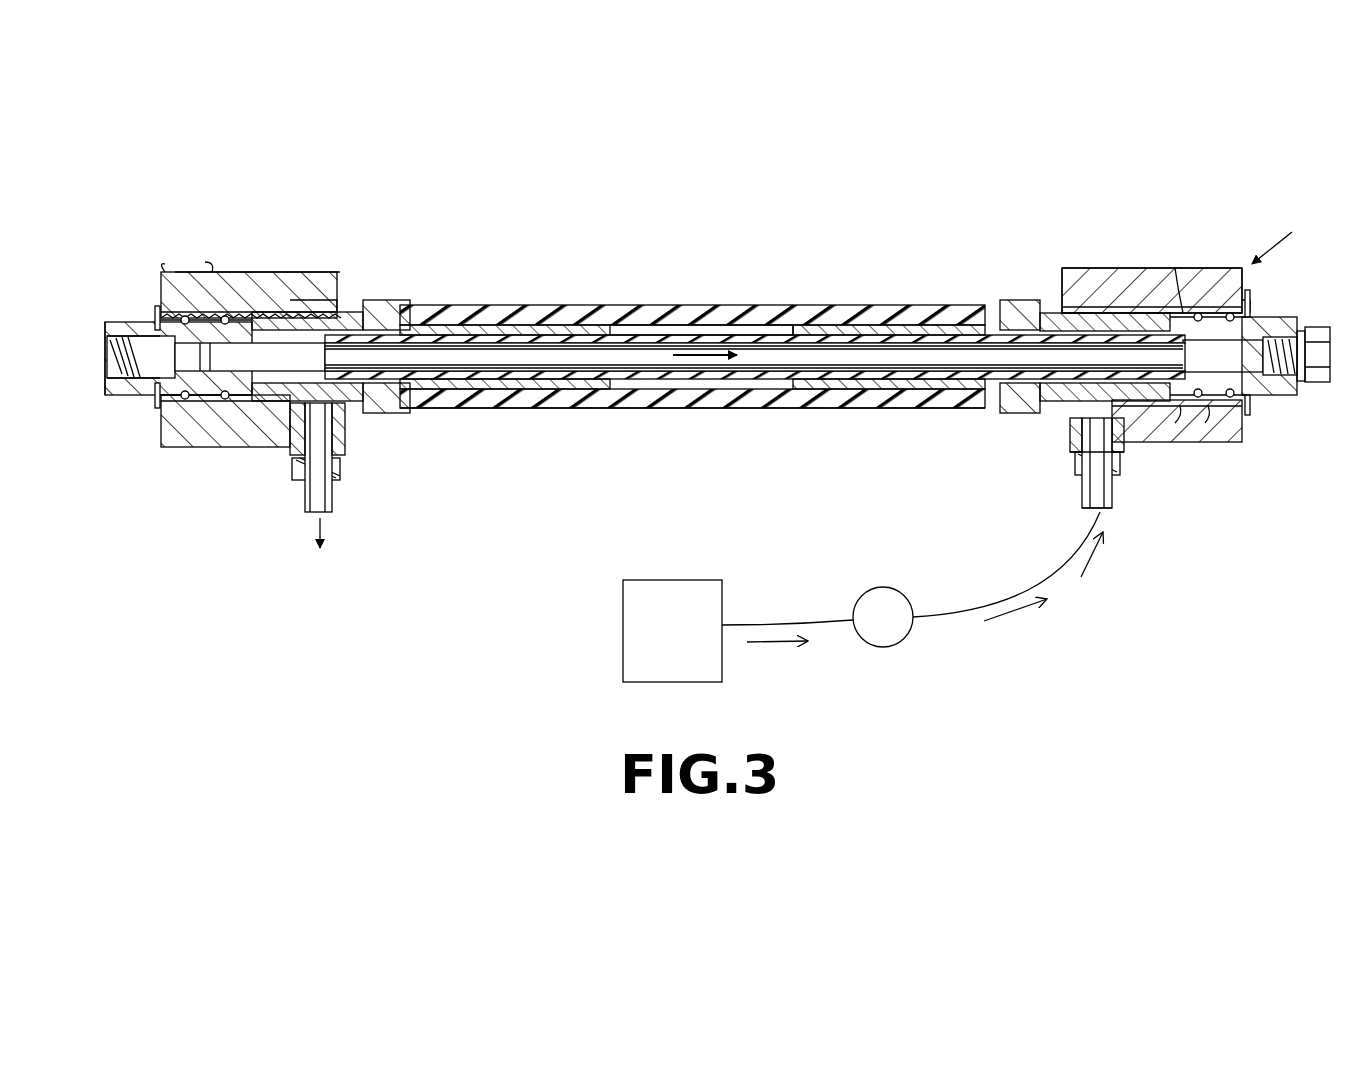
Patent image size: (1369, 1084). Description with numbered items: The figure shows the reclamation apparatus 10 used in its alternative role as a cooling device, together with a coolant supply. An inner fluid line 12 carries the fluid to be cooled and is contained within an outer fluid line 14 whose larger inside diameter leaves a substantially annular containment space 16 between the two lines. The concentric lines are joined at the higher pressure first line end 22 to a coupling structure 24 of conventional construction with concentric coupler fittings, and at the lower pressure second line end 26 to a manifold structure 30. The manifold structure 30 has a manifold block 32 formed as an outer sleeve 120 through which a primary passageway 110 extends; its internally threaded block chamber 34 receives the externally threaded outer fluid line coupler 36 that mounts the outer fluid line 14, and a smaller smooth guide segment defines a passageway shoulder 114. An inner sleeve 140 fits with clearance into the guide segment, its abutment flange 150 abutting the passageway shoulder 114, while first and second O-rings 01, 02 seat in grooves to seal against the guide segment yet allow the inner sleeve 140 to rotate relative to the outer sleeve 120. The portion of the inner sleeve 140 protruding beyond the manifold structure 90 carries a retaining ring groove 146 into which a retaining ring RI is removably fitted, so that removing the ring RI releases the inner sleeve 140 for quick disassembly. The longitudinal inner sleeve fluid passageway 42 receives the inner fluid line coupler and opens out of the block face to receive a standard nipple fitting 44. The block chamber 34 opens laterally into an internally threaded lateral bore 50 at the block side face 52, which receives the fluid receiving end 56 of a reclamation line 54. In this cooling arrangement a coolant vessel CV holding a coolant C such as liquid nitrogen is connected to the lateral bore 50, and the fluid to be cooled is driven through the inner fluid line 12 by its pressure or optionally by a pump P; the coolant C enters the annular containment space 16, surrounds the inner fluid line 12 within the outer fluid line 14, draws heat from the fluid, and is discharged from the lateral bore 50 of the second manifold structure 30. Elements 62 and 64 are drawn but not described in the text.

The reclamation apparatus 10 is at (1285, 241).
The inner fluid line 12 is at (698, 336).
The outer fluid line 14 is at (618, 305).
The annular containment space 16 is at (770, 326).
The first line end 22 is at (500, 409).
The coupling structure 24 is at (338, 271).
The second line end 26 is at (918, 409).
The manifold structure 30 is at (1216, 268).
The manifold block 32 is at (308, 271).
The block chamber 34 is at (340, 297).
The outer fluid line coupler 36 is at (396, 300).
The inner sleeve fluid passageway 42 is at (120, 380).
The nipple fitting 44 is at (1328, 346).
The lateral bore 50 is at (332, 428).
The side face 52 is at (280, 447).
The reclamation line 54 is at (1083, 500).
The fluid receiving end 56 is at (1082, 465).
The right lower block 62 is at (1244, 416).
The block face 64 is at (1066, 268).
The manifold structure 90 is at (1112, 512).
The primary passageway 110 is at (150, 351).
The passageway shoulder 114 is at (1183, 292).
The outer sleeve 120 is at (242, 447).
The inner sleeve 140 is at (130, 397).
The retaining ring groove 146 is at (140, 412).
The abutment flange 150 is at (288, 272).
The first O-ring 01 is at (687, 341).
The second O-ring 02 is at (686, 341).
The retaining ring RI is at (152, 312).
The coolant C is at (711, 598).
The coolant vessel CV is at (698, 600).
The pump P is at (893, 600).